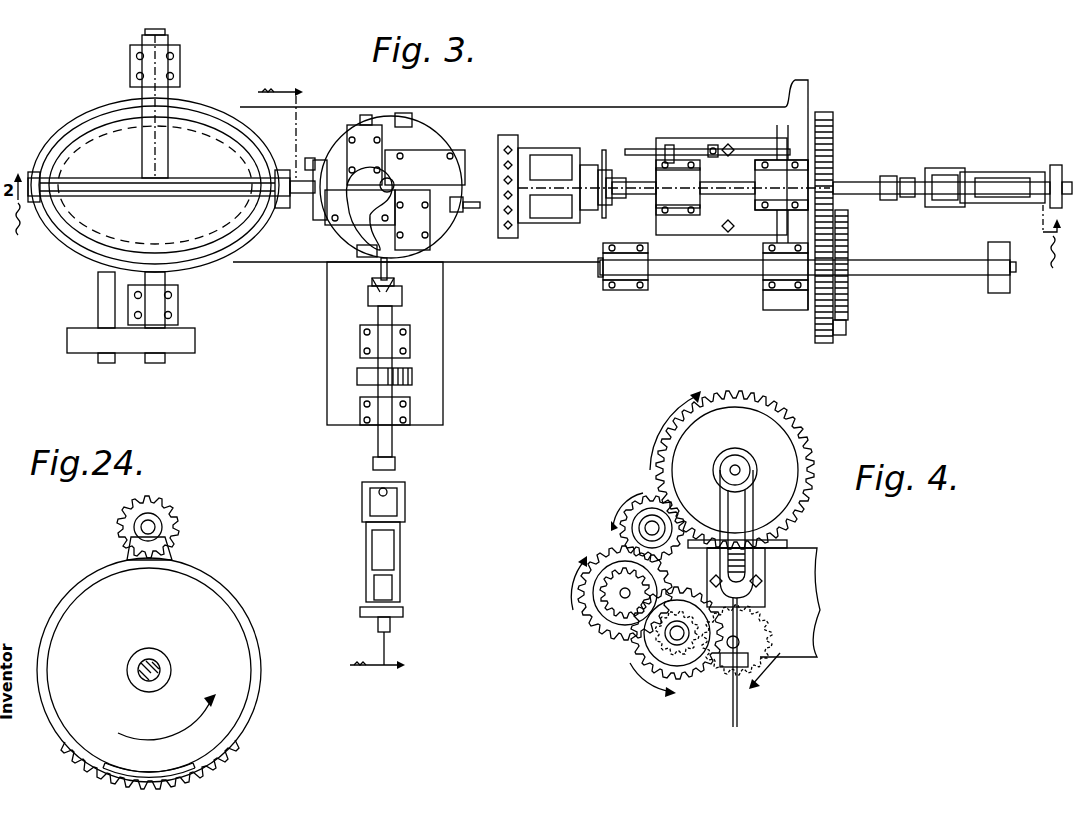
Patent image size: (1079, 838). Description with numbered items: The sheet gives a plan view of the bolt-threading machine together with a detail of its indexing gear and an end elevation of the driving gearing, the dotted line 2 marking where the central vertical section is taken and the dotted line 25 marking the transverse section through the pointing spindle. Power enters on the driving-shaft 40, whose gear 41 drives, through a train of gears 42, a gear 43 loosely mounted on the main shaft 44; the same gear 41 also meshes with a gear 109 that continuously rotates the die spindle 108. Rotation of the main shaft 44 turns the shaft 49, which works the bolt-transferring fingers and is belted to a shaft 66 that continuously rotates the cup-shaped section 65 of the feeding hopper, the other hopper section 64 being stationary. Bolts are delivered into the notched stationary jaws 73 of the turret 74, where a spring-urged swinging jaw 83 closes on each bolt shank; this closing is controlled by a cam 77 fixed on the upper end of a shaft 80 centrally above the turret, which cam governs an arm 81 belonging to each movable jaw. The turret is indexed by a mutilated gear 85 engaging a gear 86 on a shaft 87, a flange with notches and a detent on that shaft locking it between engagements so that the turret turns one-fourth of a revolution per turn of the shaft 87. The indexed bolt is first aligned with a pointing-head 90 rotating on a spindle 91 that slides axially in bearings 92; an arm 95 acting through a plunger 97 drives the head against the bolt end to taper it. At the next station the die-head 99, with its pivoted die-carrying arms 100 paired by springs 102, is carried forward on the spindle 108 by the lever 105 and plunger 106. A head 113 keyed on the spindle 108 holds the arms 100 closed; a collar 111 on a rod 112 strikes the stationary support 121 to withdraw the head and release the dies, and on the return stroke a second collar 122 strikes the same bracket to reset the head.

In FIG. 3, the dotted line 2 2 is at (1052, 236).
In FIG. 3, the dotted line 25 25 is at (331, 381).
In FIG. 3, the driving-shaft 40 is at (703, 280).
In FIG. 4, the driving-shaft 40 is at (642, 526).
In FIG. 3, the gear 41 is at (846, 283).
In FIG. 4, the gear 41 is at (625, 539).
In FIG. 3, the train of gears 42 is at (840, 330).
In FIG. 4, the train of gears 42 is at (650, 641).
In FIG. 4, the gear 43 is at (727, 668).
In FIG. 24, the main shaft 44 is at (160, 660).
In FIG. 4, the main shaft 44 is at (740, 641).
In FIG. 3, the shaft 49 is at (100, 301).
In FIG. 3, the stationary section 64 is at (75, 132).
In FIG. 3, the rotating cup-shaped section 65 is at (217, 247).
In FIG. 3, the shaft 66 is at (152, 363).
In FIG. 3, the stationary jaw 73 is at (318, 162).
In FIG. 3, the turret 74 is at (430, 126).
In FIG. 3, the cam 77 is at (373, 210).
In FIG. 3, the shaft 80 is at (392, 186).
In FIG. 3, the arm 81 is at (388, 172).
In FIG. 3, the swinging jaw 83 is at (375, 122).
In FIG. 24, the mutilated gear 85 is at (252, 644).
In FIG. 24, the gear 86 is at (170, 528).
In FIG. 24, the shaft 87 is at (153, 527).
In FIG. 3, the pointing-head 90 is at (370, 290).
In FIG. 3, the spindle 91 is at (392, 452).
In FIG. 3, the bearings 92 is at (410, 340).
In FIG. 3, the arm 95 is at (405, 495).
In FIG. 3, the plunger 97 is at (389, 632).
In FIG. 3, the die-head 99 is at (555, 165).
In FIG. 3, the die-carrying arms 100 is at (555, 187).
In FIG. 3, the springs 102 is at (604, 170).
In FIG. 3, the lever 105 is at (940, 203).
In FIG. 4, the lever 105 is at (762, 544).
In FIG. 3, the plunger 106 is at (912, 184).
In FIG. 3, the spindle 108 is at (740, 185).
In FIG. 3, the gear 109 is at (826, 128).
In FIG. 4, the gear 109 is at (780, 448).
In FIG. 3, the collar 111 is at (713, 146).
In FIG. 3, the rod 112 is at (645, 152).
In FIG. 3, the head 113 is at (605, 212).
In FIG. 3, the stationary support 121 is at (680, 145).
In FIG. 3, the second collar 122 is at (667, 145).